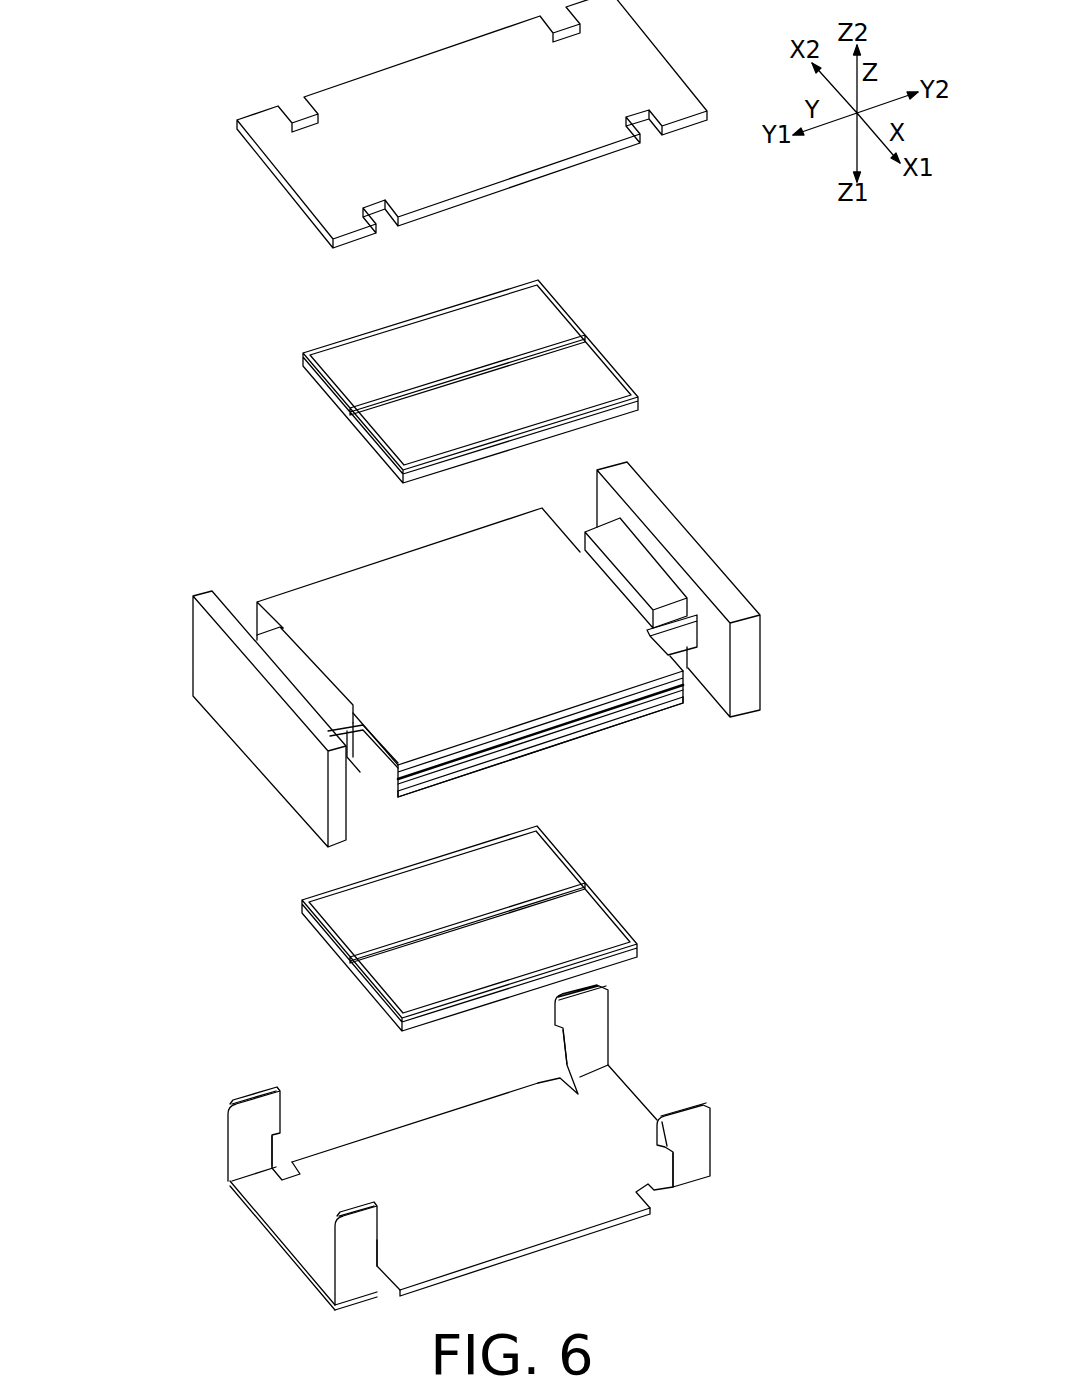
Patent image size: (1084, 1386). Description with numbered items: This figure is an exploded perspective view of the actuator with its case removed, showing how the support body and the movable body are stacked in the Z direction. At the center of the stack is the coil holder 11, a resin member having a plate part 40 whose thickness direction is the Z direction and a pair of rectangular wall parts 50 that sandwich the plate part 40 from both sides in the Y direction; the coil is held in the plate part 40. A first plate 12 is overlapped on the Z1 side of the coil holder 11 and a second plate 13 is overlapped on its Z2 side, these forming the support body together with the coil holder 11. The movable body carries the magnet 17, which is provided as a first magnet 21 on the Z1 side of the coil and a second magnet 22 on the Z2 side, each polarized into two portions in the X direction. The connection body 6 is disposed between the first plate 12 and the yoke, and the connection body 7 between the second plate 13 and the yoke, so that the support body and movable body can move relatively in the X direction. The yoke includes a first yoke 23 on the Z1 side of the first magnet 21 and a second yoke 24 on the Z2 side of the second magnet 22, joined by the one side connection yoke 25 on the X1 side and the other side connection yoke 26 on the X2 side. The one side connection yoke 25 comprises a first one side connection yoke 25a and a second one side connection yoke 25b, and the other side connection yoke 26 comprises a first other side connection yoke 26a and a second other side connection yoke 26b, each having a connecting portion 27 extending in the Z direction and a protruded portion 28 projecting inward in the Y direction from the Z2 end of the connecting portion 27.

The second yoke 24 is at (432, 92).
The second magnet 22 is at (309, 383).
The first magnet 21 is at (309, 947).
The magnet 17 is at (106, 510).
The second plate 13 is at (392, 597).
The connection body 7 is at (285, 640).
The wall part 50 is at (220, 683).
The connection body 6 is at (682, 663).
The plate part 40 is at (572, 729).
The coil holder 11 is at (617, 711).
The first plate 12 is at (530, 757).
The first yoke 23 is at (515, 1210).
The other side connection yoke 26 is at (286, 1028).
The first other side connection yoke 26a is at (255, 1112).
The second other side connection yoke 26b is at (562, 1012).
The one side connection yoke 25 is at (656, 1030).
The first one side connection yoke 25a is at (380, 1207).
The second one side connection yoke 25b is at (702, 1106).
The protruded portion 28 is at (277, 1112).
The connecting portion 27 is at (275, 1152).